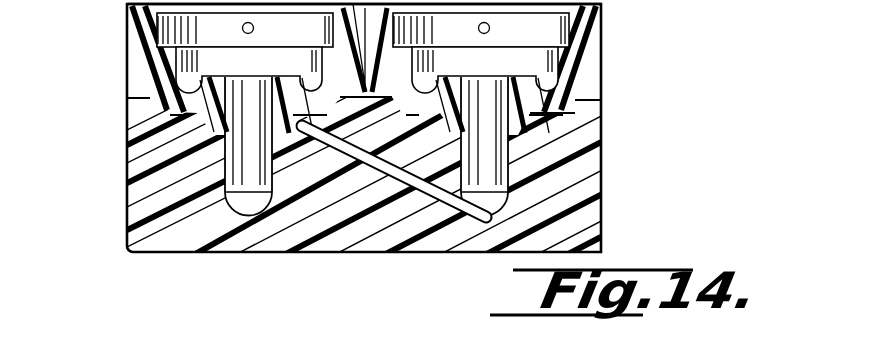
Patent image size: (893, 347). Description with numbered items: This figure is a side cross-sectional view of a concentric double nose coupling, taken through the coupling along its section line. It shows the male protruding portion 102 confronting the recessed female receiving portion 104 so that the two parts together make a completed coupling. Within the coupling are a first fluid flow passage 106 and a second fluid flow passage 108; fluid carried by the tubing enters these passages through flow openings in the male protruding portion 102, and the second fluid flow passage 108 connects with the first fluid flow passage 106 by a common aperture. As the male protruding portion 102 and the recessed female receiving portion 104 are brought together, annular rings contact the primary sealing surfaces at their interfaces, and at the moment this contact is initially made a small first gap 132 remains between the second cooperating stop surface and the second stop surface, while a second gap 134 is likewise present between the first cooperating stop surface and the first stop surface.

The male protruding portion 102 is at (600, 71).
The recessed female receiving portion 104 is at (586, 173).
The first fluid flow passage 106 is at (226, 172).
The second fluid flow passage 108 is at (394, 178).
The first gap 132 is at (570, 127).
The second gap 134 is at (615, 97).